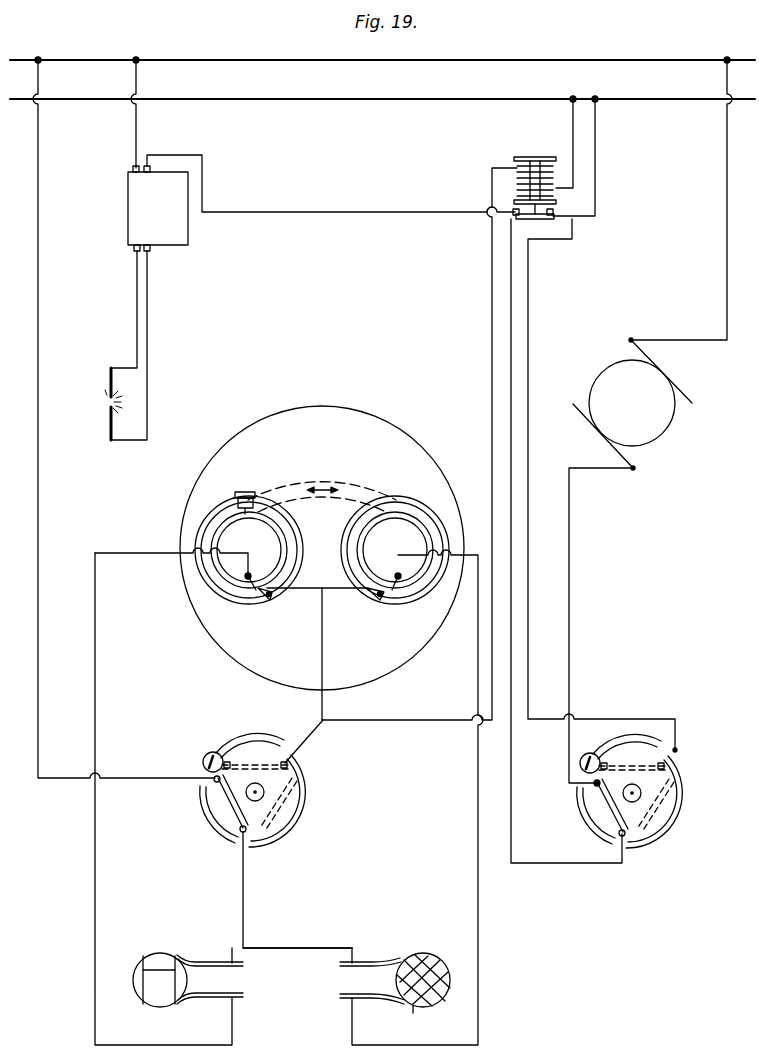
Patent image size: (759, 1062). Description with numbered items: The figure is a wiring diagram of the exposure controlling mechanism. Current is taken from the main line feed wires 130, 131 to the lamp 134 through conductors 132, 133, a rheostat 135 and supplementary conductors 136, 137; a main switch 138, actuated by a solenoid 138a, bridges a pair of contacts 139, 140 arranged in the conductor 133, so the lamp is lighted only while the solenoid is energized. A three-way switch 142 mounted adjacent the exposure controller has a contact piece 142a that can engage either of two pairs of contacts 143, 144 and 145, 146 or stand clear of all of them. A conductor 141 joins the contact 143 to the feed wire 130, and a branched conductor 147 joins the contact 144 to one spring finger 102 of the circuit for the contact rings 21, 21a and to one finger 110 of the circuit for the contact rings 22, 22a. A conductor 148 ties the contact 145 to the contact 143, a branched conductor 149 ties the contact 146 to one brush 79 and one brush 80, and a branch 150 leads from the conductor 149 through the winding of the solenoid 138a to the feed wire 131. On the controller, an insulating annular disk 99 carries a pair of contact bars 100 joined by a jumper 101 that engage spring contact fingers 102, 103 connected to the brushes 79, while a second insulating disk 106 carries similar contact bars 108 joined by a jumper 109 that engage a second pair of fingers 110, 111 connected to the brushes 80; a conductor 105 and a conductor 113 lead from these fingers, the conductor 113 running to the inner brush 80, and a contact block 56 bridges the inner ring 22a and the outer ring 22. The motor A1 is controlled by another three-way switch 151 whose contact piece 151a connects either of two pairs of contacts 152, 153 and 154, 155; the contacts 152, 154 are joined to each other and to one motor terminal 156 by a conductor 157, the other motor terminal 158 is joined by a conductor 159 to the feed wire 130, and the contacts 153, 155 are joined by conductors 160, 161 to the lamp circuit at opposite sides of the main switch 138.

The main line feed wire 130 is at (382, 47).
The main line feed wire 131 is at (382, 88).
The conductor 132 is at (119, 114).
The conductor 133 is at (608, 154).
The lamp 134 is at (98, 406).
The rheostat 135 is at (158, 208).
The supplementary conductor 136 is at (120, 324).
The supplementary conductor 137 is at (149, 345).
The main switch 138 is at (528, 219).
The solenoid 138a is at (543, 152).
The contact 139 is at (513, 213).
The contact 140 is at (552, 213).
The conductor 141 is at (113, 419).
The three-way switch 142 is at (263, 779).
The contact piece 142a is at (232, 806).
The contact 143 is at (214, 782).
The contact 144 is at (240, 834).
The contact 145 is at (250, 747).
The contact 146 is at (297, 763).
The branched conductor 147 is at (297, 935).
The conductor 148 is at (203, 762).
The branched conductor 149 is at (273, 740).
The branch 150 is at (447, 409).
The three-way switch 151 is at (650, 802).
The contact piece 151a is at (610, 806).
The contact 152 is at (607, 771).
The contact 153 is at (619, 836).
The contact 154 is at (628, 751).
The contact 155 is at (670, 762).
The motor terminal 156 is at (619, 447).
The conductor 157 is at (601, 625).
The motor terminal 158 is at (650, 361).
The conductor 159 is at (681, 200).
The conductor 160 is at (514, 578).
The conductor 161 is at (529, 320).
The motor A1 is at (632, 403).
The contact ring 21 is at (220, 590).
The contact ring 21a is at (225, 543).
The contact ring 22 is at (322, 563).
The contact ring 22a is at (371, 543).
The contact block 56 is at (246, 492).
The brush 79 is at (262, 596).
The brush 80 is at (384, 598).
The insulating annular disk 99 is at (158, 956).
The contact bar 100 is at (176, 995).
The jumper 101 is at (163, 972).
The spring contact finger 102 is at (211, 961).
The spring contact finger 103 is at (211, 1000).
The electrical conductor 105 is at (152, 796).
The insulating disk 106 is at (438, 962).
The contact bar 108 is at (420, 1003).
The jumper 109 is at (443, 965).
The spring contact finger 110 is at (378, 961).
The spring contact finger 111 is at (376, 1000).
The conductor 113 is at (436, 797).